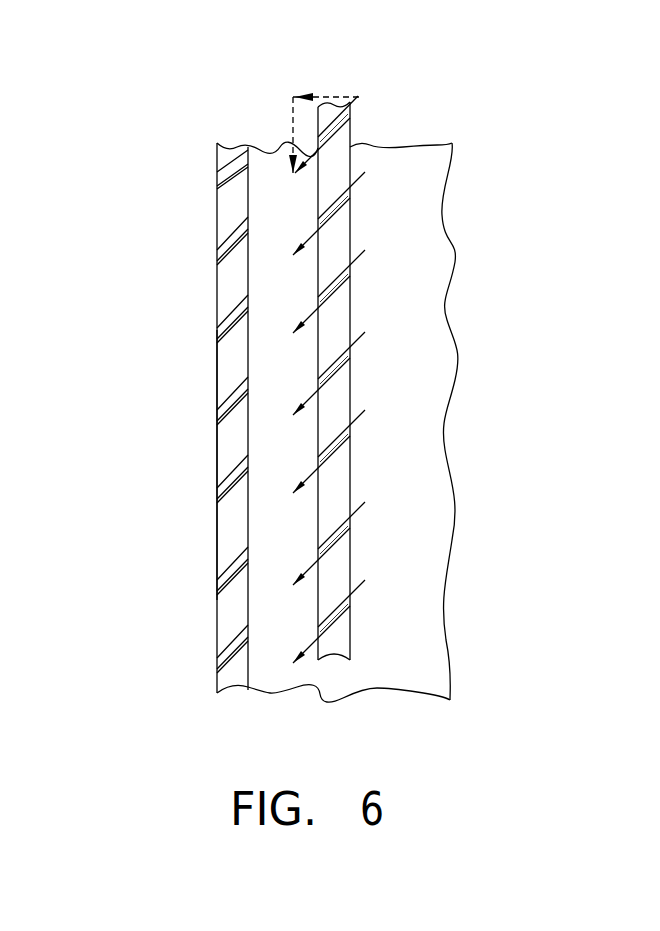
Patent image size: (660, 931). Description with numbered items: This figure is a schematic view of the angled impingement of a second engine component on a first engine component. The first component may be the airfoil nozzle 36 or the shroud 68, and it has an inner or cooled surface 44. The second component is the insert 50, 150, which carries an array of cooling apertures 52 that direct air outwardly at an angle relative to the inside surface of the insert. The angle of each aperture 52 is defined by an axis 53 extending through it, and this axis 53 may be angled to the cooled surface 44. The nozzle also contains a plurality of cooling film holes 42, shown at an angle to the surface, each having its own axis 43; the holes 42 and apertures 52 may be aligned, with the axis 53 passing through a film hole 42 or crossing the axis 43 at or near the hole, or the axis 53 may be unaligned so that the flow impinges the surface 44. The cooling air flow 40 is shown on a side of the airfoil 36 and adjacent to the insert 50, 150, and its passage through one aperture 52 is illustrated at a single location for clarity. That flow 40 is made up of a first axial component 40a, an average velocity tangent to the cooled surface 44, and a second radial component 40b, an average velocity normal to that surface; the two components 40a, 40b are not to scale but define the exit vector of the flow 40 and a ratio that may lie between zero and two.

The airfoil nozzle 36 is at (150, 418).
The shroud 68 is at (209, 297).
The cooling air flow 40 is at (351, 103).
The first axial component 40a is at (292, 122).
The second radial component 40b is at (337, 97).
The cooling film holes 42 is at (210, 340).
The axis of the cooling film hole 43 is at (259, 214).
The cooled surface 44 is at (249, 183).
The insert 50 is at (400, 422).
The insert 150 is at (440, 225).
The cooling aperture 52 is at (352, 135).
The axis of the aperture 53 is at (364, 173).